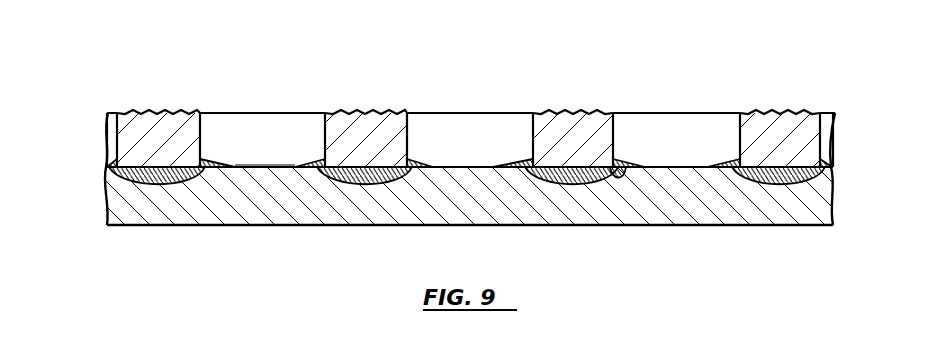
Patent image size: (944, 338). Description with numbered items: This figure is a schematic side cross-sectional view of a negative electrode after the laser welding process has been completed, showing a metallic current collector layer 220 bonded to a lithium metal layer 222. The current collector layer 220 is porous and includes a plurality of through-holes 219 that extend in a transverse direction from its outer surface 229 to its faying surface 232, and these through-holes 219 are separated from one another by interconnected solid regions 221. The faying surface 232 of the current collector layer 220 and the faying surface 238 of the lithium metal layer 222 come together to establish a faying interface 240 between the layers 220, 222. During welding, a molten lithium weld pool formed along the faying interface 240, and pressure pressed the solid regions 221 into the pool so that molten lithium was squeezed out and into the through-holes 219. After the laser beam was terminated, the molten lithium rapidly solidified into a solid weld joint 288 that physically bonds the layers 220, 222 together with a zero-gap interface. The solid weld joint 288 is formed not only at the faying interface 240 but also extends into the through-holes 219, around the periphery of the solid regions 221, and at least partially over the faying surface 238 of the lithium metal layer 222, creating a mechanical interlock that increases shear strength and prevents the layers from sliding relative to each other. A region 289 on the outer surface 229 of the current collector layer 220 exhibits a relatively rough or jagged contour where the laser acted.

The through-holes 219 is at (265, 130).
The current collector layer 220 is at (830, 127).
The interconnected solid regions 221 is at (737, 130).
The lithium metal layer 222 is at (688, 226).
The outer surface 229 is at (340, 112).
The faying surface 232 is at (617, 178).
The faying surface 238 is at (265, 167).
The faying interface 240 is at (104, 165).
The solid weld joint 288 is at (517, 160).
The region 289 is at (160, 112).